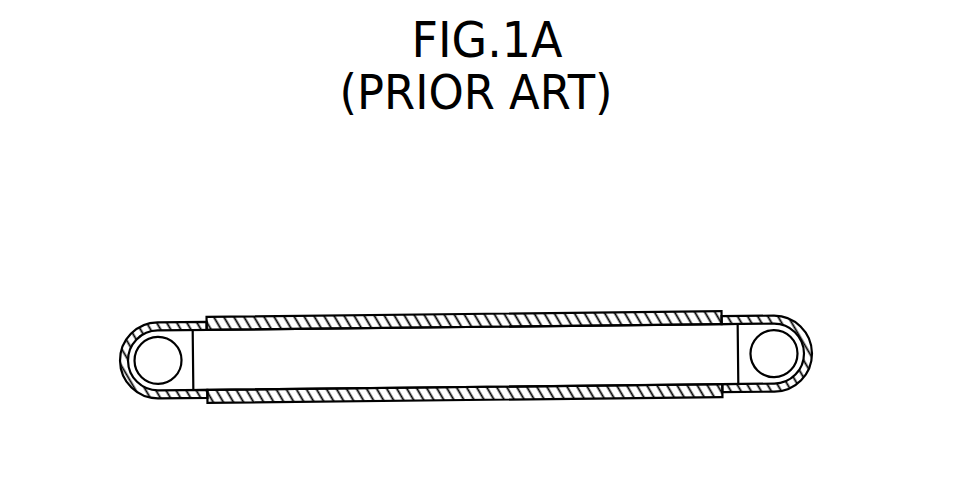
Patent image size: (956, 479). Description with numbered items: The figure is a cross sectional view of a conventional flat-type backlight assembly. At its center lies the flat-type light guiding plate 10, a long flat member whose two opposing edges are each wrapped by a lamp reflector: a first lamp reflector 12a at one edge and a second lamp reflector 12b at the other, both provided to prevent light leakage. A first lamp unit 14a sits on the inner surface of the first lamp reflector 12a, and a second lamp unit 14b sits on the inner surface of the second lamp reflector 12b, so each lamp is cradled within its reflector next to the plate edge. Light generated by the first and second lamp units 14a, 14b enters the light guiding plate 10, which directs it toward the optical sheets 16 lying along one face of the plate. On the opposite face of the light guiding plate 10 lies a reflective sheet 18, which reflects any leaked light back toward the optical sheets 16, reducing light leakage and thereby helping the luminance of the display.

The flat-type light guiding plate 10 is at (585, 373).
The first lamp reflector 12a is at (143, 330).
The second lamp reflector 12b is at (790, 318).
The first lamp unit 14a is at (143, 362).
The second lamp unit 14b is at (787, 355).
The optical sheets 16 is at (520, 315).
The reflective sheet 18 is at (525, 399).